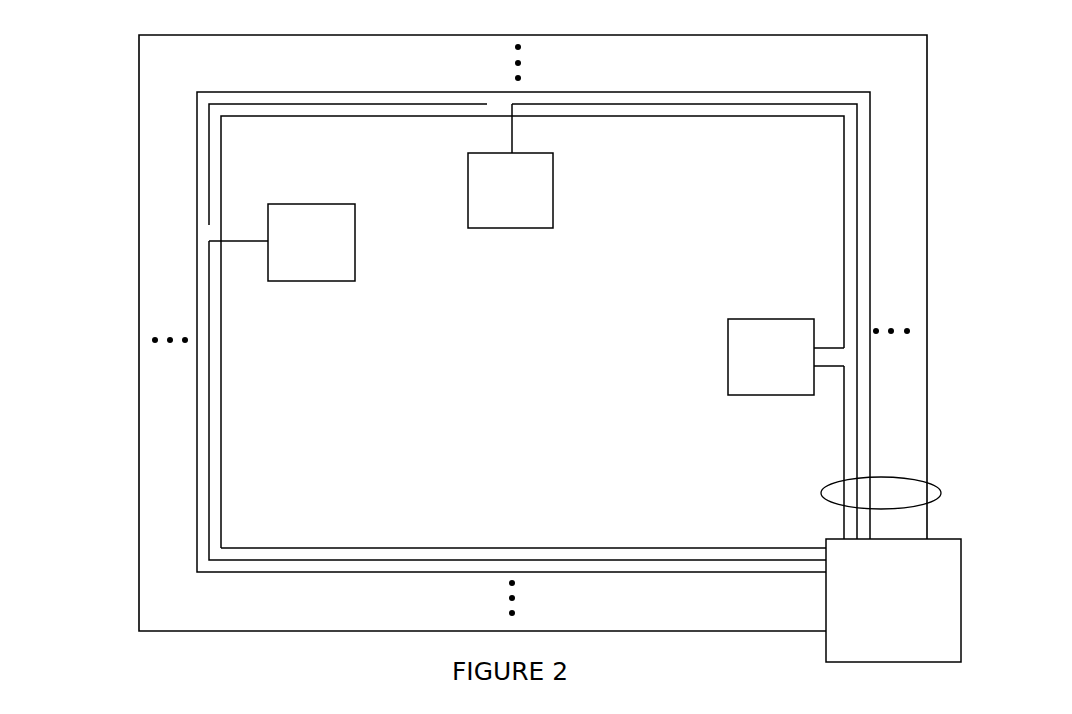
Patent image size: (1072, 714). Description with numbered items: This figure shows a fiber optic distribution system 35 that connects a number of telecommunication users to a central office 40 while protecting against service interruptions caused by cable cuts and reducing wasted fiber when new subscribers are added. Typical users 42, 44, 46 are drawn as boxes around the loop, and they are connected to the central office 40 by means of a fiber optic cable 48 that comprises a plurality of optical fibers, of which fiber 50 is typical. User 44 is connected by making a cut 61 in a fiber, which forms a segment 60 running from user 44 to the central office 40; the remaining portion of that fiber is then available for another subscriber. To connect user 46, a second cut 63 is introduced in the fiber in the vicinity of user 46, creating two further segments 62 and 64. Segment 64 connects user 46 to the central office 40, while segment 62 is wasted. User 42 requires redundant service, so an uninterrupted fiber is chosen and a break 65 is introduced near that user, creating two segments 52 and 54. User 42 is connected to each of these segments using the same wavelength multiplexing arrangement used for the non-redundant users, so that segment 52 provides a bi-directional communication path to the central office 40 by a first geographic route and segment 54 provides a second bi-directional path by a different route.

The fiber optic distribution system 35 is at (1020, 117).
The central office 40 is at (870, 634).
The user 42 is at (756, 379).
The user 44 is at (495, 213).
The user 46 is at (296, 264).
The fiber optic cable 48 is at (940, 490).
The fiber 50 is at (927, 328).
The segment 52 is at (843, 423).
The segment 54 is at (844, 255).
The segment 60 is at (758, 105).
The cut 61 is at (499, 95).
The segment 62 is at (402, 105).
The second cut 63 is at (196, 238).
The segment 64 is at (212, 394).
The break 65 is at (850, 368).